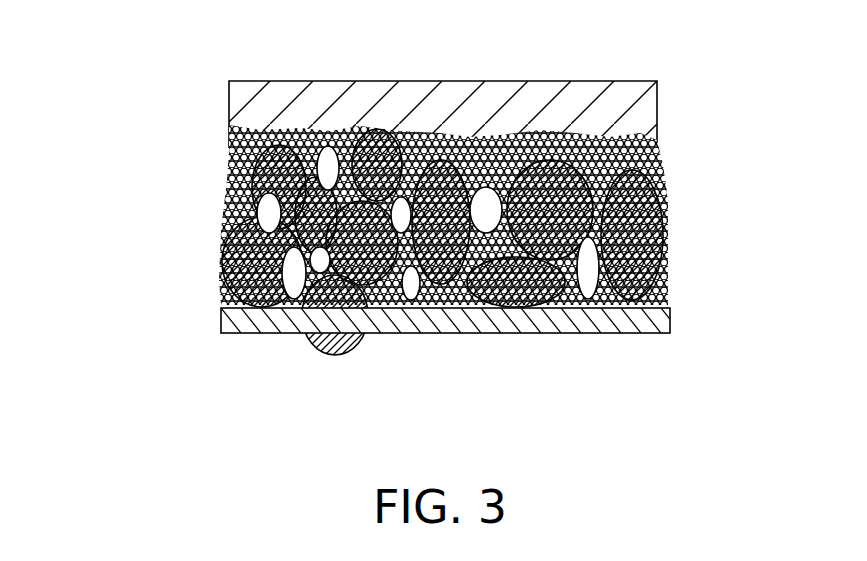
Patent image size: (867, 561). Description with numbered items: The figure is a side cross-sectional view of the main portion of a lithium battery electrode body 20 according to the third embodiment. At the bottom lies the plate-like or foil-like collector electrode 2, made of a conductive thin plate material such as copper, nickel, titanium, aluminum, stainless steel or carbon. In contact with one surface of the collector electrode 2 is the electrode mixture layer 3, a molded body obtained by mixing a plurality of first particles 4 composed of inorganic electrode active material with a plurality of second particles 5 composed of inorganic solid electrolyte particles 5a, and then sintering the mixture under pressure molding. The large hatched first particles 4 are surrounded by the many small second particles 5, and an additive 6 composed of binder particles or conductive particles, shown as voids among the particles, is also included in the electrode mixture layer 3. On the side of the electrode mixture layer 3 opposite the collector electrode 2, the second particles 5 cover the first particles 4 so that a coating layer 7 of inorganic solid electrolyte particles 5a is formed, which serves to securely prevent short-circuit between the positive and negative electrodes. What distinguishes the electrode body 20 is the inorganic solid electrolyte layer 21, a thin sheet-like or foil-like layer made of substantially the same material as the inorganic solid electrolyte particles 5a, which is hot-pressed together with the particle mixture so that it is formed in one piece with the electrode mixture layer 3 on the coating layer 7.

The lithium battery electrode body 20 is at (150, 135).
The inorganic solid electrolyte layer 21 is at (230, 97).
The electrode mixture layer 3 is at (207, 122).
The collector electrode 2 is at (221, 318).
The first particles 4 is at (382, 138).
The second particles 5 is at (443, 212).
The inorganic solid electrolyte particles 5a is at (463, 140).
The additive 6 is at (328, 150).
The coating layer 7 is at (663, 133).